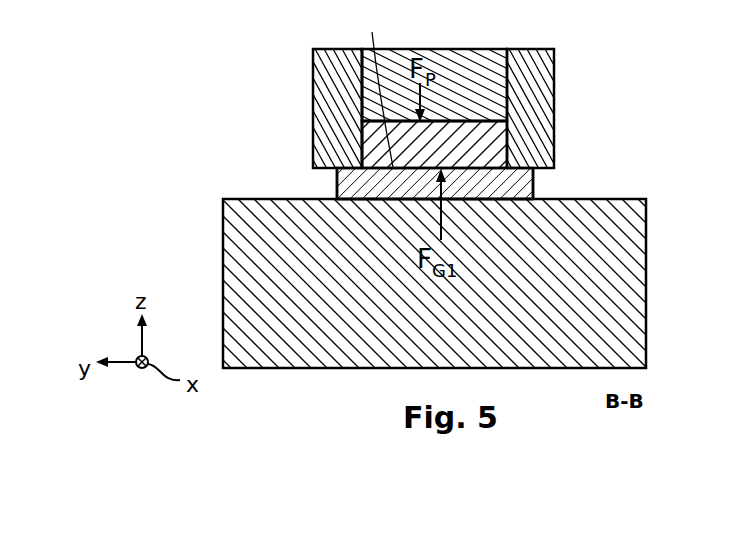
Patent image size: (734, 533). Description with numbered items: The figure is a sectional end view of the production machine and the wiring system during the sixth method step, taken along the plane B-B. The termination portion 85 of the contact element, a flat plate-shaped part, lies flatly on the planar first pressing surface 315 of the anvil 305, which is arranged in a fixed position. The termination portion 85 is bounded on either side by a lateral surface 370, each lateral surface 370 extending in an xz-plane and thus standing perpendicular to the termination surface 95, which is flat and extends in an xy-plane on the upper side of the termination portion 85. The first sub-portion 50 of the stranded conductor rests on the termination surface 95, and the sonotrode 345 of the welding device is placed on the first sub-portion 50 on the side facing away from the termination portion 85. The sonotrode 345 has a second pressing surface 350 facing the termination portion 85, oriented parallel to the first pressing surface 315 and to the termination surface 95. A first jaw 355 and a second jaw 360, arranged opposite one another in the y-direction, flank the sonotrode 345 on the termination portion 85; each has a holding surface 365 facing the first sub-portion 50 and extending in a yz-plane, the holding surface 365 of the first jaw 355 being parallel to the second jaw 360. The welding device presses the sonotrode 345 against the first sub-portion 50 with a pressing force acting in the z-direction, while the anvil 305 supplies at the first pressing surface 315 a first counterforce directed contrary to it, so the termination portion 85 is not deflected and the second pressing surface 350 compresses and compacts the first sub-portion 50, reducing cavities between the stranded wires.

The first sub-portion 50 is at (502, 147).
The termination portion 85 is at (517, 180).
The termination surface 95 is at (375, 85).
The anvil 305 is at (632, 262).
The first pressing surface 315 is at (482, 200).
The sonotrode 345 is at (463, 63).
The second pressing surface 350 is at (486, 122).
The first jaw 355 is at (323, 73).
The second jaw 360 is at (545, 66).
The holding surface 365 is at (370, 88).
The lateral surface 370 is at (336, 193).